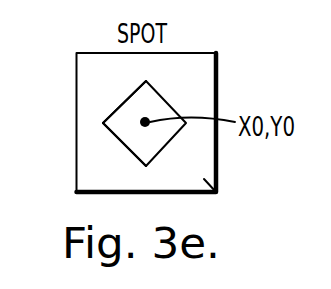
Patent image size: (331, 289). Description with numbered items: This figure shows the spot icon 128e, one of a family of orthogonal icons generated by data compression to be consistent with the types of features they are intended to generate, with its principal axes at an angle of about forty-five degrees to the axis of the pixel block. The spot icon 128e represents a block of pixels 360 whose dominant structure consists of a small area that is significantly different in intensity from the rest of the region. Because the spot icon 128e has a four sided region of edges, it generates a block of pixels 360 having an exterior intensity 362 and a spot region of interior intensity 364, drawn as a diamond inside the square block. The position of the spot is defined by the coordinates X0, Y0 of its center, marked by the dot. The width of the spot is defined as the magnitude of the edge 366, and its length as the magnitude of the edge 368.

The spot icon 128e is at (223, 58).
The block of pixels 360 is at (218, 85).
The exterior intensity 362 is at (203, 178).
The spot region of interior intensity 364 is at (112, 117).
The edge 366 is at (127, 98).
The edge 368 is at (115, 136).